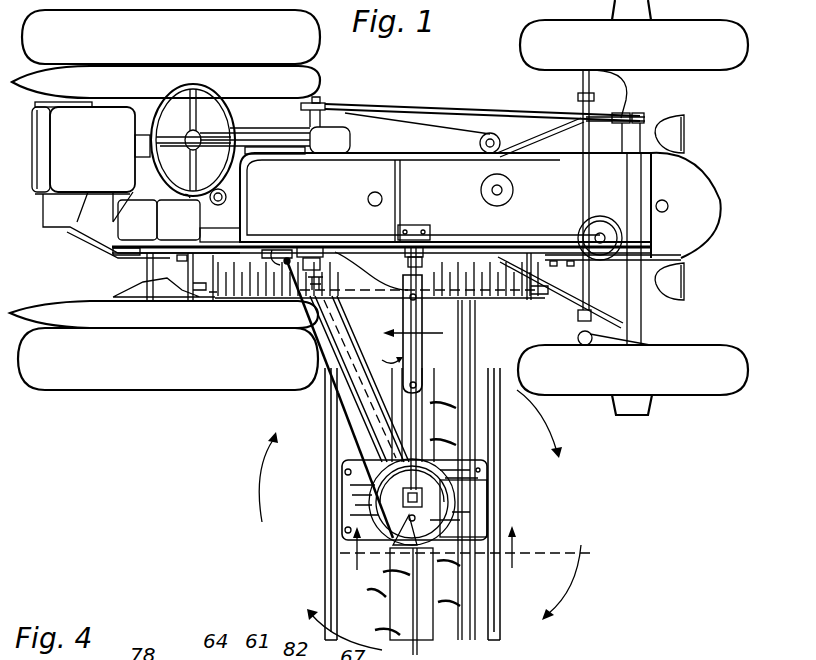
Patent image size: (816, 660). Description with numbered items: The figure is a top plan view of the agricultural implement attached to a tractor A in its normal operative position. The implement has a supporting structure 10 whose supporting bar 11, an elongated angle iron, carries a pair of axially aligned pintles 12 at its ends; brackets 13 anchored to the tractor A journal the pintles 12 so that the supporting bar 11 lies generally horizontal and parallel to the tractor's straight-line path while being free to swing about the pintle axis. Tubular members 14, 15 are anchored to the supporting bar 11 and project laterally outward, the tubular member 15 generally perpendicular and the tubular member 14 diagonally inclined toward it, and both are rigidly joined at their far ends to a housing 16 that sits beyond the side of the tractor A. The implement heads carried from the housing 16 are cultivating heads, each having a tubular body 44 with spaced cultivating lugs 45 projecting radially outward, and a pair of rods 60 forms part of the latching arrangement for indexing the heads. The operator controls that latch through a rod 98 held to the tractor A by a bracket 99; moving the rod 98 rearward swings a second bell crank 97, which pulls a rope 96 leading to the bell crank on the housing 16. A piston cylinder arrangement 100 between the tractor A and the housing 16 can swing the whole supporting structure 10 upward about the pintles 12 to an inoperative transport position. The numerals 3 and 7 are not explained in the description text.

The tractor A is at (434, 102).
The hydraulic cylinder 3 is at (422, 357).
The direction of movement arrows 7 is at (420, 520).
The supporting structure 10 is at (485, 348).
The supporting bar 11 is at (439, 278).
The pintles 12 is at (551, 296).
The brackets 13 is at (537, 253).
The tubular member 14 is at (340, 327).
The tubular member 15 is at (470, 370).
The housing 16 is at (378, 512).
The tubular body 44 is at (425, 427).
The cultivating lugs 45 is at (370, 383).
The rods 60 is at (330, 582).
The rope 96 is at (322, 365).
The second bell crank 97 is at (276, 248).
The rod 98 is at (240, 244).
The bracket 99 is at (227, 236).
The piston cylinder arrangement 100 is at (406, 346).